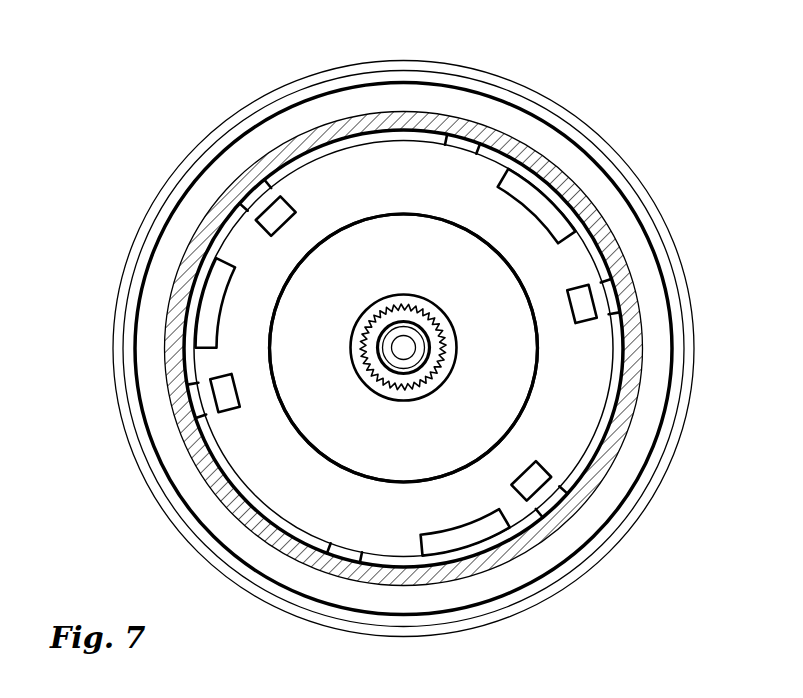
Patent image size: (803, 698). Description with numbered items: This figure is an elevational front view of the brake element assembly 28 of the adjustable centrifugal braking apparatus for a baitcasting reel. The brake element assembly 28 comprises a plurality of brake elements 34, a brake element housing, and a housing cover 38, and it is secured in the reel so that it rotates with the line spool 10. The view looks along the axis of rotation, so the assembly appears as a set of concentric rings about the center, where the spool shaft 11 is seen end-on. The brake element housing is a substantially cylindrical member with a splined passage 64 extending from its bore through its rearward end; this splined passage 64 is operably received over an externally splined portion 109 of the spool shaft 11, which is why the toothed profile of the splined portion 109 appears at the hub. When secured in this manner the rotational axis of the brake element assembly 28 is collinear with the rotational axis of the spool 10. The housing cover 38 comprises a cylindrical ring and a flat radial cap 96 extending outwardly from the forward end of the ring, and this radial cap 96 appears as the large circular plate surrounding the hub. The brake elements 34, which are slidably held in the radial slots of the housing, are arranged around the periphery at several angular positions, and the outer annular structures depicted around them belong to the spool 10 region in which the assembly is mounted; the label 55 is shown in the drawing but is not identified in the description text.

The line spool 10 is at (403, 344).
The housing shell 55 is at (300, 120).
The brake element assembly 28 is at (393, 152).
The brake elements 34 is at (252, 196).
The housing cover 38 is at (380, 197).
The radial cap 96 is at (275, 437).
The spool shaft 11 is at (398, 343).
The splined passage 64 is at (437, 340).
The externally splined portion 109 is at (424, 386).